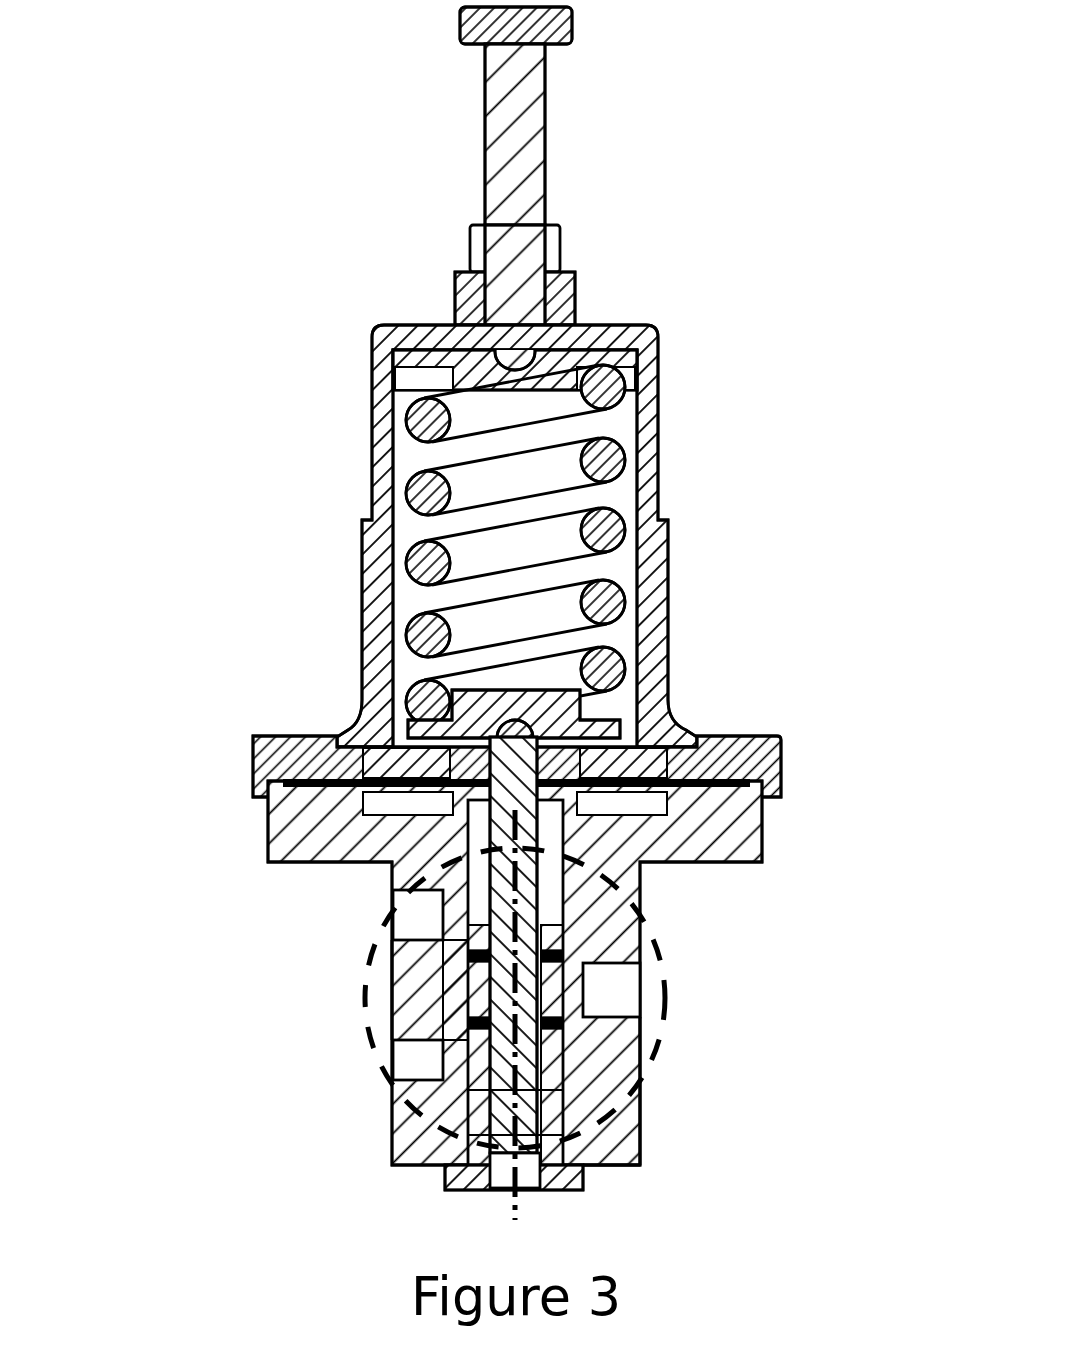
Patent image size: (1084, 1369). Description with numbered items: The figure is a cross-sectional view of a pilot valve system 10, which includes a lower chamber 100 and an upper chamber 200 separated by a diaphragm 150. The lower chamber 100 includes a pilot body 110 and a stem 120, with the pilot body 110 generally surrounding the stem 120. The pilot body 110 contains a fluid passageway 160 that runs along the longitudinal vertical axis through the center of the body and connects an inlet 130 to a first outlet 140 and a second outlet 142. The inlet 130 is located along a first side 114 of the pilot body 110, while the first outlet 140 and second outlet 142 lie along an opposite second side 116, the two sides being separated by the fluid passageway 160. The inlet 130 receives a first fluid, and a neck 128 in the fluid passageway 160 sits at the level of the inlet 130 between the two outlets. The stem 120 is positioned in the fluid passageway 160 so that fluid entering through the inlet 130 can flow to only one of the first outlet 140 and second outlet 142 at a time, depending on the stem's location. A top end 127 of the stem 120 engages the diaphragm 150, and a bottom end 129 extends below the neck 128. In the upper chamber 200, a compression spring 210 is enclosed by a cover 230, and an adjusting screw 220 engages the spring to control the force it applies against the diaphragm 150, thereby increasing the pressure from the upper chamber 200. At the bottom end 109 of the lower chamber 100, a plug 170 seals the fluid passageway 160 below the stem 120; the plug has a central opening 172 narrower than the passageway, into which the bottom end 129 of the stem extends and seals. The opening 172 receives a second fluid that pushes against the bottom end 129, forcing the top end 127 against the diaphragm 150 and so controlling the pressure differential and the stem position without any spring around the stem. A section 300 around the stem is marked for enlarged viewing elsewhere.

The pilot valve system 10 is at (700, 187).
The lower chamber 100 is at (415, 848).
The bottom end of the lower chamber 109 is at (638, 1158).
The pilot body 110 is at (588, 912).
The first side of the pilot body 114 is at (642, 1098).
The second side of the pilot body 116 is at (385, 967).
The stem 120 is at (530, 1050).
The top end of the stem 127 is at (520, 725).
The neck 128 is at (458, 983).
The bottom end of the stem 129 is at (508, 1138).
The inlet 130 is at (612, 987).
The first outlet 140 is at (418, 1058).
The second outlet 142 is at (428, 917).
The diaphragm 150 is at (290, 781).
The fluid passageway 160 is at (553, 883).
The plug 170 is at (445, 1173).
The opening 172 is at (525, 1192).
The upper chamber 200 is at (508, 510).
The compression spring 210 is at (430, 408).
The adjusting screw 220 is at (505, 100).
The cover 230 is at (372, 626).
The section 300 is at (660, 960).